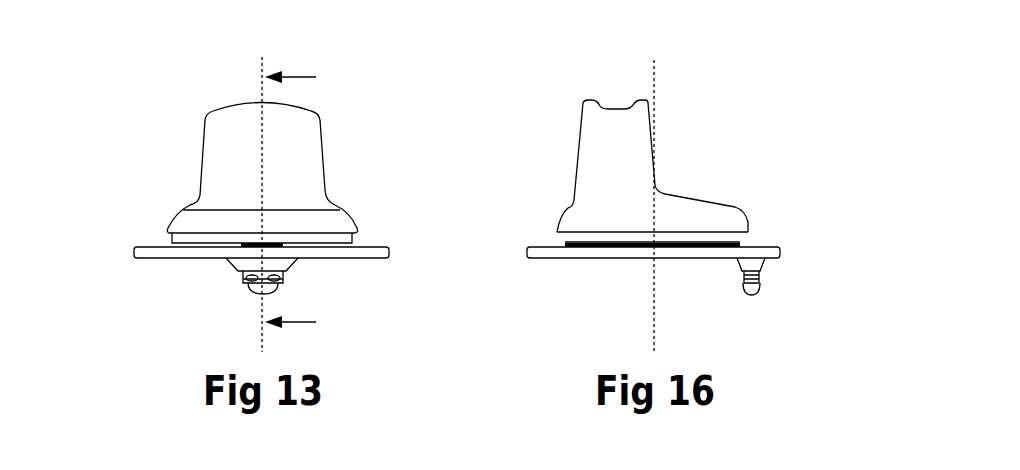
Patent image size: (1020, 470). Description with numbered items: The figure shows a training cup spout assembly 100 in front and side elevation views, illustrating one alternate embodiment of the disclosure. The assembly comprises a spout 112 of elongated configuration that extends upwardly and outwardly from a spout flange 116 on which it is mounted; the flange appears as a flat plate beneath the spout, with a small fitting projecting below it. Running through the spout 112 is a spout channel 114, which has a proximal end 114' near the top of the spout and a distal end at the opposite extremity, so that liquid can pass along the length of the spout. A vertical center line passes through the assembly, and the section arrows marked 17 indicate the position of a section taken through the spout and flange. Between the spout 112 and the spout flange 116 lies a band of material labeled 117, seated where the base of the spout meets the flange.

In FIG. 13, the training cup spout assembly 100 is at (264, 163).
In FIG. 16, the training cup spout assembly 100 is at (685, 171).
In FIG. 13, the spout 112 is at (325, 150).
In FIG. 16, the spout 112 is at (655, 158).
In FIG. 16, the spout channel 114 is at (614, 162).
In FIG. 16, the proximal end 114' is at (672, 77).
In FIG. 13, the spout flange 116 is at (389, 254).
In FIG. 16, the spout flange 116 is at (781, 254).
In FIG. 13, the gasket / seal 117 is at (150, 245).
In FIG. 13, the section line 17- 17 is at (311, 200).